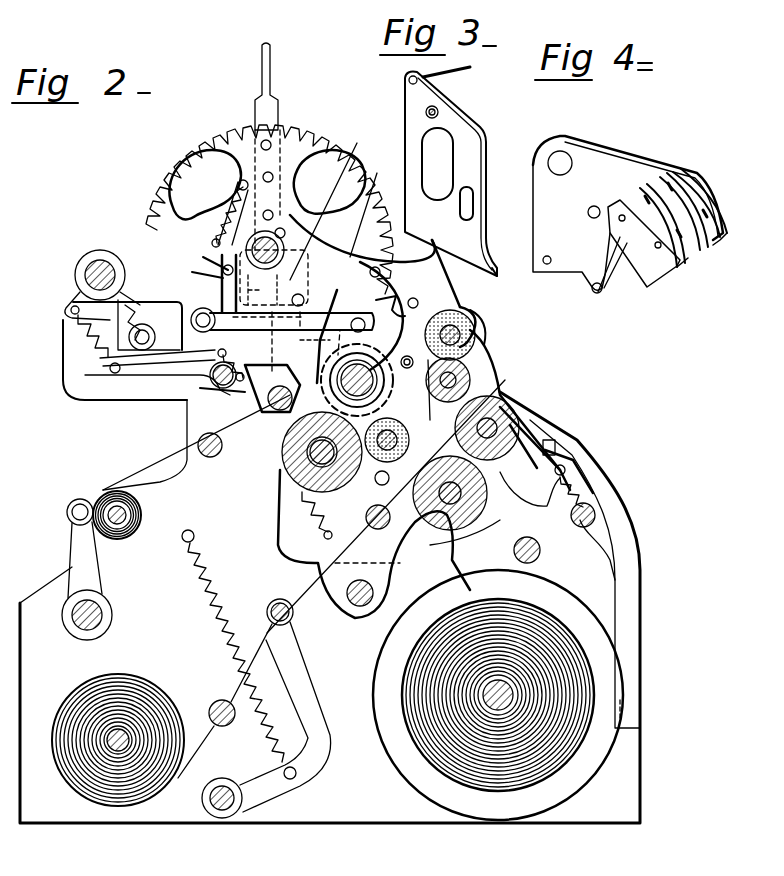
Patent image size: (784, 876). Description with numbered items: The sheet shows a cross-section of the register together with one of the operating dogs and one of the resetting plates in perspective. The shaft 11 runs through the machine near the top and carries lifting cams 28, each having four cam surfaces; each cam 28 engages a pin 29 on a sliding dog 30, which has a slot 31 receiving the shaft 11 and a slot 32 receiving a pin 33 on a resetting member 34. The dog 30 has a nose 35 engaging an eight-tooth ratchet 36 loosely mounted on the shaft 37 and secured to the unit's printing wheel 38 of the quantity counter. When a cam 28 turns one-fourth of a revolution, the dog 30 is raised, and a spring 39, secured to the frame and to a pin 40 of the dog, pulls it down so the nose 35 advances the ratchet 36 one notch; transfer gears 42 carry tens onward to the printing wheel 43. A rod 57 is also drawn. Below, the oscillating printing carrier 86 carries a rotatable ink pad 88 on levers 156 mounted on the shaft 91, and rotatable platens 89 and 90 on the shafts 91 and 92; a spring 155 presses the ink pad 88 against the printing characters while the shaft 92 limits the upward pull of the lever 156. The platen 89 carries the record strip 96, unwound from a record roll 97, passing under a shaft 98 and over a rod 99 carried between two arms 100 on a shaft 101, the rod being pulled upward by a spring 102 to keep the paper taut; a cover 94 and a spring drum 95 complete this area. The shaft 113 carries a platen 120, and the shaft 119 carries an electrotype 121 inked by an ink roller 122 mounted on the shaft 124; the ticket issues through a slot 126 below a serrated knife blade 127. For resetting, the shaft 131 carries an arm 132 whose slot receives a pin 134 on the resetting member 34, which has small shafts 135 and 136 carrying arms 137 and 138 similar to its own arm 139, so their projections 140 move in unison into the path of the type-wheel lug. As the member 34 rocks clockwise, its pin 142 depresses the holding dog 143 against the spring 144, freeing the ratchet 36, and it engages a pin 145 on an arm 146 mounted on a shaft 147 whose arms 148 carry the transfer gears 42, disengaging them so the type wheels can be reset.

In FIG. 2, the shaft 11 is at (334, 204).
In FIG. 2, the lifting cam 28 is at (266, 217).
In FIG. 2, the pin 29 is at (283, 232).
In FIG. 3, the pin 29 is at (437, 110).
In FIG. 2, the sliding dog 30 is at (253, 193).
In FIG. 3, the sliding dog 30 is at (460, 126).
In FIG. 2, the slot 31 is at (370, 262).
In FIG. 3, the slot 31 is at (436, 150).
In FIG. 2, the slot 32 is at (390, 274).
In FIG. 3, the slot 32 is at (470, 206).
In FIG. 4, the pin 33 is at (589, 210).
In FIG. 2, the resetting member 34 is at (373, 209).
In FIG. 4, the resetting member 34 is at (583, 155).
In FIG. 2, the nose 35 is at (275, 414).
In FIG. 3, the nose 35 is at (500, 266).
In FIG. 2, the ratchet 36 is at (374, 400).
In FIG. 2, the shaft 37 is at (378, 387).
In FIG. 2, the unit's printing wheel 38 is at (440, 312).
In FIG. 2, the spring 39 is at (182, 184).
In FIG. 2, the pin 40 is at (240, 182).
In FIG. 3, the pin 40 is at (471, 65).
In FIG. 2, the transfer gear 42 is at (395, 306).
In FIG. 2, the printing wheel 43 is at (419, 360).
In FIG. 2, the rod 57 is at (264, 73).
In FIG. 2, the oscillating printing carrier 86 is at (366, 528).
In FIG. 2, the ink pad 88 is at (400, 433).
In FIG. 2, the platen 89 is at (300, 488).
In FIG. 2, the platen 90 is at (374, 544).
In FIG. 2, the shaft 91 is at (284, 479).
In FIG. 2, the shaft 92 is at (482, 504).
In FIG. 2, the cover 94 is at (474, 547).
In FIG. 2, the spring drum 95 is at (565, 677).
In FIG. 2, the record strip 96 is at (168, 463).
In FIG. 2, the record roll 97 is at (138, 694).
In FIG. 2, the shaft 98 is at (217, 702).
In FIG. 2, the rod 99 is at (294, 617).
In FIG. 2, the arm 100 is at (313, 695).
In FIG. 2, the shaft 101 is at (221, 818).
In FIG. 2, the spring 102 is at (211, 603).
In FIG. 2, the shaft 113 is at (523, 408).
In FIG. 2, the shaft 119 is at (490, 372).
In FIG. 2, the platen 120 is at (512, 430).
In FIG. 2, the electrotype 121 is at (458, 362).
In FIG. 2, the ink roller 122 is at (474, 334).
In FIG. 2, the shaft 124 is at (468, 320).
In FIG. 2, the slot 126 is at (500, 392).
In FIG. 2, the serrated knife blade 127 is at (488, 378).
In FIG. 2, the shaft 131 is at (262, 410).
In FIG. 2, the arm 132 is at (220, 402).
In FIG. 2, the pin 134 is at (207, 357).
In FIG. 4, the pin 134 is at (550, 266).
In FIG. 4, the shaft 135 is at (677, 175).
In FIG. 4, the shaft 136 is at (708, 198).
In FIG. 4, the arm 137 is at (652, 180).
In FIG. 4, the arm 138 is at (648, 270).
In FIG. 4, the arm 139 is at (690, 188).
In FIG. 4, the projection 140 is at (699, 269).
In FIG. 2, the pin 142 is at (270, 412).
In FIG. 4, the pin 142 is at (595, 294).
In FIG. 2, the holding dog 143 is at (182, 397).
In FIG. 2, the spring 144 is at (210, 375).
In FIG. 2, the pin 145 is at (214, 283).
In FIG. 2, the arm 146 is at (218, 270).
In FIG. 2, the shaft 147 is at (104, 347).
In FIG. 2, the arm 148 is at (314, 333).
In FIG. 2, the spring 155 is at (300, 509).
In FIG. 2, the lever 156 is at (408, 478).